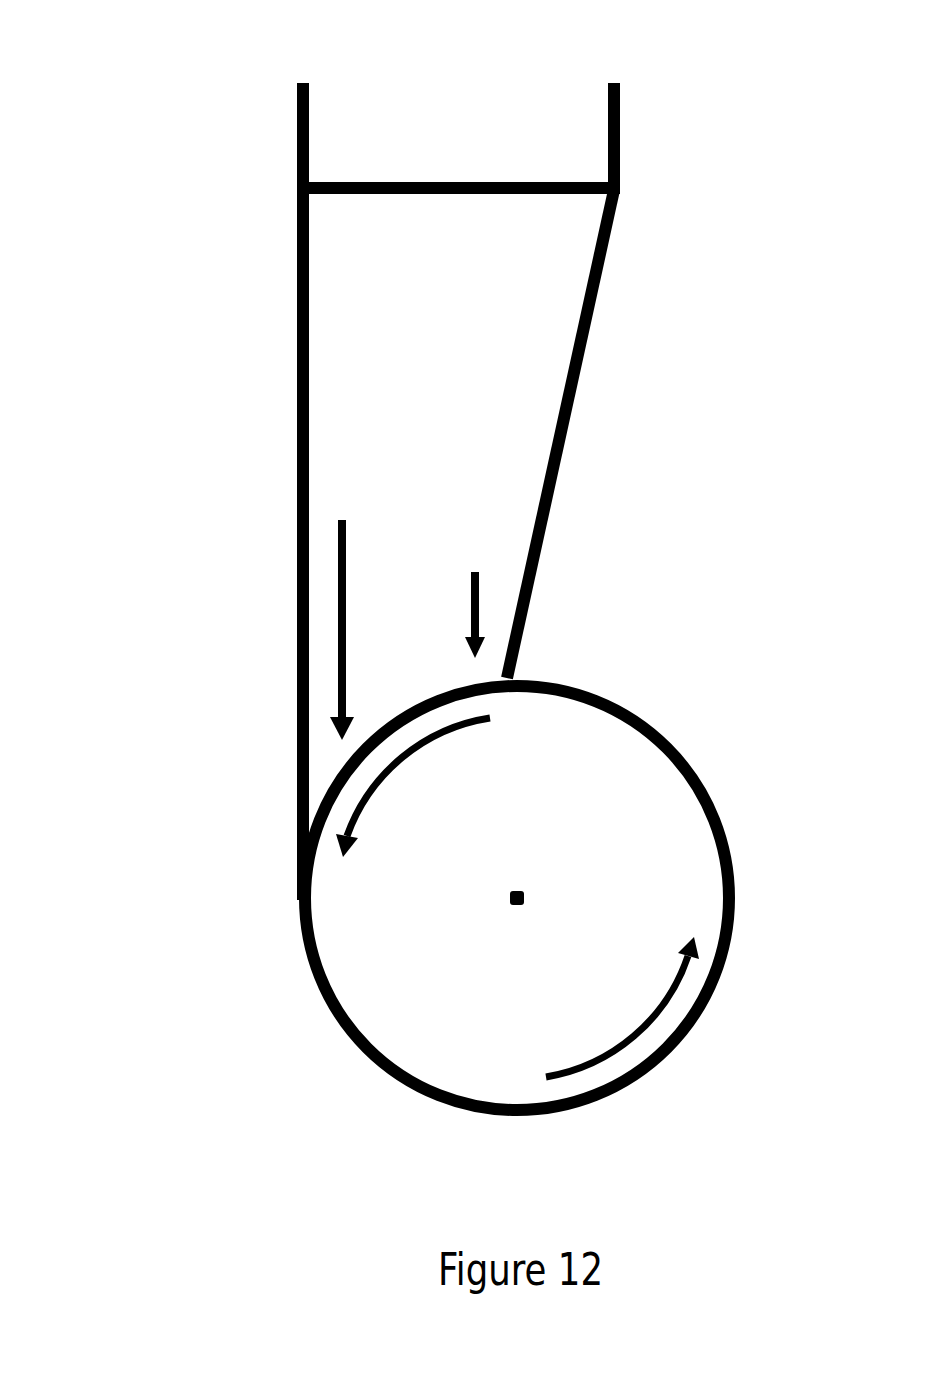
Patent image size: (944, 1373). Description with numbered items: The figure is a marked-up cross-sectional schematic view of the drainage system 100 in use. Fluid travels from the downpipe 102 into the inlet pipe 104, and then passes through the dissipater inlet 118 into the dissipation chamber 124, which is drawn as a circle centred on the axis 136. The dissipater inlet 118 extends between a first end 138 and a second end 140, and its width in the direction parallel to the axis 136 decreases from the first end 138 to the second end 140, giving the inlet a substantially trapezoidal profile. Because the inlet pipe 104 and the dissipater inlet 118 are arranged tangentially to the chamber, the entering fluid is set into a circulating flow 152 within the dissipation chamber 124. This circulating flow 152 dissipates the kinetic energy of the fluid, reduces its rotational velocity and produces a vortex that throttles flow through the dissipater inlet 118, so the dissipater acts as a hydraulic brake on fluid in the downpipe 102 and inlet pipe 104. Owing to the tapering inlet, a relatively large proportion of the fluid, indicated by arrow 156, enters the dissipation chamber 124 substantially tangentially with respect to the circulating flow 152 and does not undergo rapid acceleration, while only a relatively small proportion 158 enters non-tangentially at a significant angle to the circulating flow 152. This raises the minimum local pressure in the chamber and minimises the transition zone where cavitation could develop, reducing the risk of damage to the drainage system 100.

The drainage system 100 is at (237, 57).
The downpipe 102 is at (297, 146).
The inlet pipe 104 is at (297, 267).
The dissipater inlet 118 is at (423, 695).
The dissipation chamber 124 is at (668, 916).
The axis 136 is at (526, 892).
The first end 138 is at (278, 813).
The second end 140 is at (531, 665).
The circulating flow 152 is at (363, 780).
The arrow 156 is at (338, 627).
The small proportion 158 is at (480, 608).